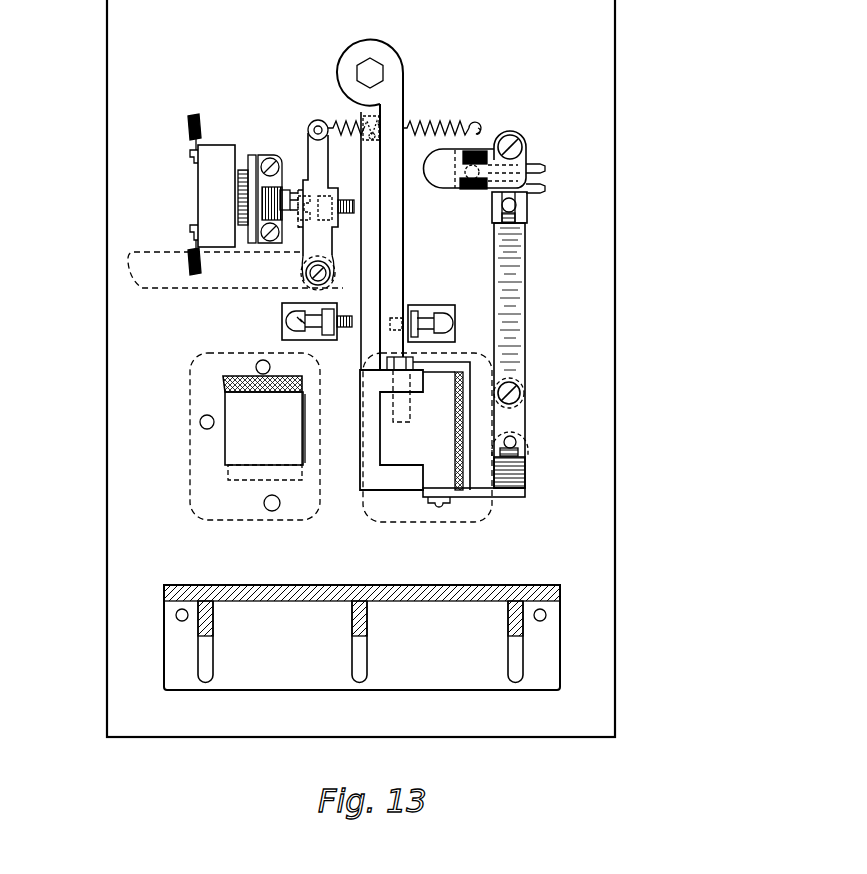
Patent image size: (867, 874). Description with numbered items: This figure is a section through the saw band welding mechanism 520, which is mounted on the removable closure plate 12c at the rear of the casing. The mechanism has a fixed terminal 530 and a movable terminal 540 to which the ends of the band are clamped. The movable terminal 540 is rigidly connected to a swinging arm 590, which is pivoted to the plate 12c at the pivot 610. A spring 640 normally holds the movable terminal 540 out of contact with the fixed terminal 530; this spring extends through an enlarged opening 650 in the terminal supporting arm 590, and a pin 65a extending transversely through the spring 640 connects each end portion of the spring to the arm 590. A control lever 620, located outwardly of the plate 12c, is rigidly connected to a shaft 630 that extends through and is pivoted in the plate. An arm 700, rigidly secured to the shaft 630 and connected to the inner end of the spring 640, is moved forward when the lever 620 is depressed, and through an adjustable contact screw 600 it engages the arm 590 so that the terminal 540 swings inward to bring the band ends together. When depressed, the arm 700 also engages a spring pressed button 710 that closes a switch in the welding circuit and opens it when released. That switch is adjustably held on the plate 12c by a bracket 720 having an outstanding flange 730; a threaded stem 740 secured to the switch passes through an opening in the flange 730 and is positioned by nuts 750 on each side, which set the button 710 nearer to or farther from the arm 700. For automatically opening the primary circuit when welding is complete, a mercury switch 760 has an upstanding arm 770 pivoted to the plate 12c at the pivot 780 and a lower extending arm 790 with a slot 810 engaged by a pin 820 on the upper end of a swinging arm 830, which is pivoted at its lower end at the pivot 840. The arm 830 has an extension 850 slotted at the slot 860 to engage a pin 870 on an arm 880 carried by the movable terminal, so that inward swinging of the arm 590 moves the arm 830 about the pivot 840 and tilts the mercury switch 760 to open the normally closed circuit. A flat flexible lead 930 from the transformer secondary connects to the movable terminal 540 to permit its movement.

The pivot 610 is at (373, 64).
The swinging arm 590 is at (395, 262).
The enlarged opening 650 is at (376, 120).
The spring 640 is at (431, 122).
The arm 700 is at (304, 146).
The shaft 630 is at (303, 286).
The mercury switch 760 is at (445, 182).
The adjustable contact screw 600 is at (345, 214).
The pin 65a is at (373, 140).
The outstanding flange 730 is at (252, 157).
The nuts 750 is at (257, 197).
The spring pressed button 710 is at (294, 172).
The bracket 720 is at (262, 240).
The threaded stem 740 is at (294, 243).
The control lever 620 is at (128, 291).
The fixed terminal 530 is at (243, 432).
The movable terminal 540 is at (395, 445).
The lead 930 is at (459, 470).
The arm 880 is at (490, 492).
The welding mechanism 520 is at (527, 285).
The swinging arm 830 is at (511, 305).
The pivot 840 is at (520, 389).
The extension 850 is at (521, 411).
The pin 870 is at (518, 442).
The slot 860 is at (525, 466).
The pin 820 is at (518, 206).
The slot 810 is at (512, 222).
The upstanding arm 770 is at (530, 164).
The pivot 780 is at (517, 135).
The lower extending arm 790 is at (533, 199).
The removable plate 12c is at (122, 511).